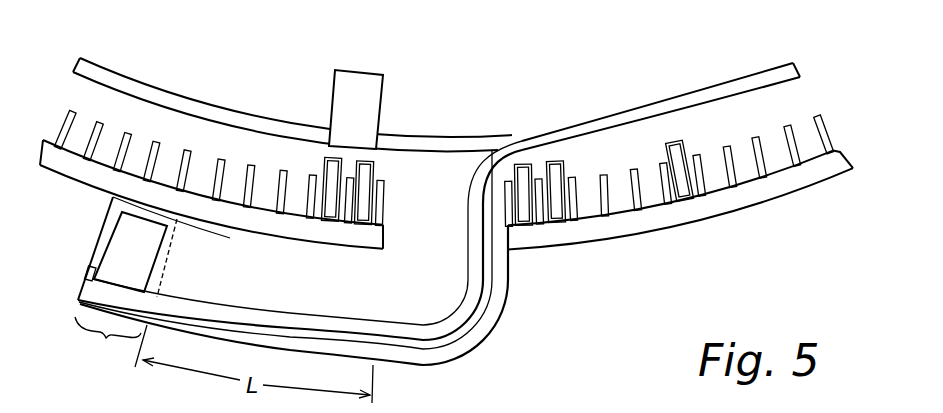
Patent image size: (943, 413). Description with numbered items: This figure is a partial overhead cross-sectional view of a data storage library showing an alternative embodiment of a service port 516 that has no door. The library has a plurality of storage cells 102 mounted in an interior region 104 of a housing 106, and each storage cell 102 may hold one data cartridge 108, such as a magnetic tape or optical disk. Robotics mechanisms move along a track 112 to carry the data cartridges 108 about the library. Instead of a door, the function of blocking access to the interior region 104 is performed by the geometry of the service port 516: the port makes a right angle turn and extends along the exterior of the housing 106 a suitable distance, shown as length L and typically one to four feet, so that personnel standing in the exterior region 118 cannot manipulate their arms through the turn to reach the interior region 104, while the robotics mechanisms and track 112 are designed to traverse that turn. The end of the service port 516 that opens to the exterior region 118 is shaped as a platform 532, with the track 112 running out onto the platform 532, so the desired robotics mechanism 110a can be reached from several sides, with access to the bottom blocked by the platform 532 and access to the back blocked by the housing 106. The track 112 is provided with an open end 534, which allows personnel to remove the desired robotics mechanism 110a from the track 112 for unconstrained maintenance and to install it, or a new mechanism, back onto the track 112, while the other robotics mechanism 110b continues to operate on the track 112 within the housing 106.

The storage cell 102 is at (745, 133).
The interior region 104 is at (637, 37).
The housing 106 is at (683, 220).
The data cartridge 108 is at (675, 137).
The desired robotics mechanism 110a is at (150, 252).
The other robotics mechanism 110b is at (372, 92).
The track 112 is at (228, 118).
The exterior region 118 is at (646, 326).
The service port 516 is at (484, 338).
The platform 532 is at (108, 343).
The open end 534 is at (90, 270).